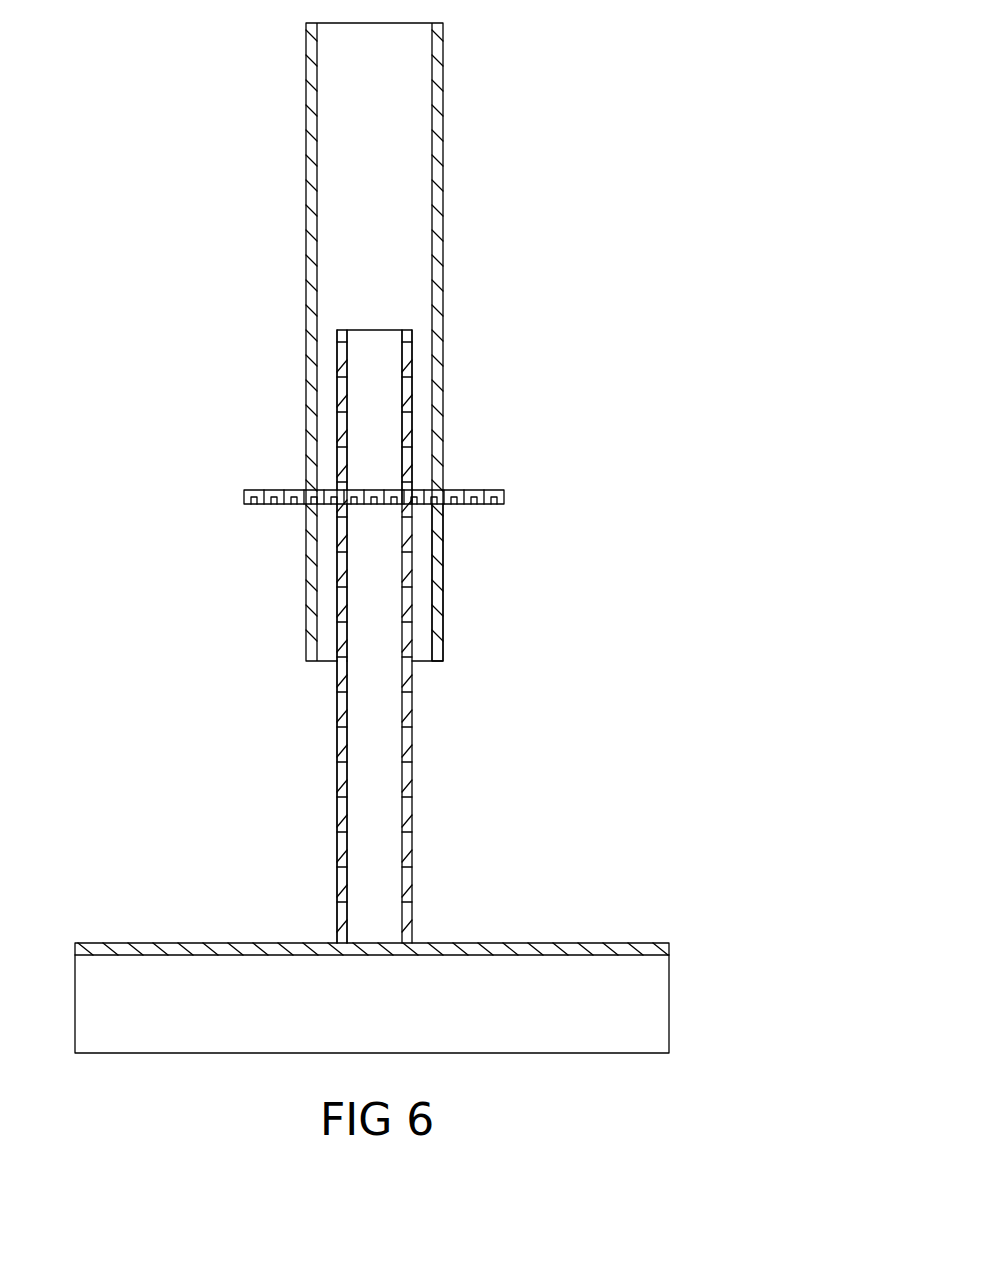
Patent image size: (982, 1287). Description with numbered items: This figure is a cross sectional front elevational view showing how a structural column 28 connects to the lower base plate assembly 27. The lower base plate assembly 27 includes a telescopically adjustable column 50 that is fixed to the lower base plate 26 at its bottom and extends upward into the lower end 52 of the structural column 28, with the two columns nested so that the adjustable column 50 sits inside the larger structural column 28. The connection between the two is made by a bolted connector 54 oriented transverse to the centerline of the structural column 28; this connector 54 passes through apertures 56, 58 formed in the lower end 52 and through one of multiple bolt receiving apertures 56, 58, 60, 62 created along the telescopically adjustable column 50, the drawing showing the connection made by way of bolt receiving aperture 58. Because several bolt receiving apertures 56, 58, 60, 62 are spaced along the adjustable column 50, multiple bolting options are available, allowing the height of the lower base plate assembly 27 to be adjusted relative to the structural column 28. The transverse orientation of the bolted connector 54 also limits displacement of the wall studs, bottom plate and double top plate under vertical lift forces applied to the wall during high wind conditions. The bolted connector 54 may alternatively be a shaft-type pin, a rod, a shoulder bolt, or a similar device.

The lower base plate 26 is at (574, 942).
The lower base plate assembly 27 is at (652, 573).
The structural column 28 is at (443, 106).
The telescopically adjustable column 50 is at (412, 852).
The lower end 52 is at (443, 627).
The bolted connector 54 is at (331, 497).
The aperture 56 is at (343, 394).
The aperture 58 is at (406, 493).
The bolt receiving aperture 60 is at (343, 600).
The bolt receiving aperture 62 is at (343, 705).